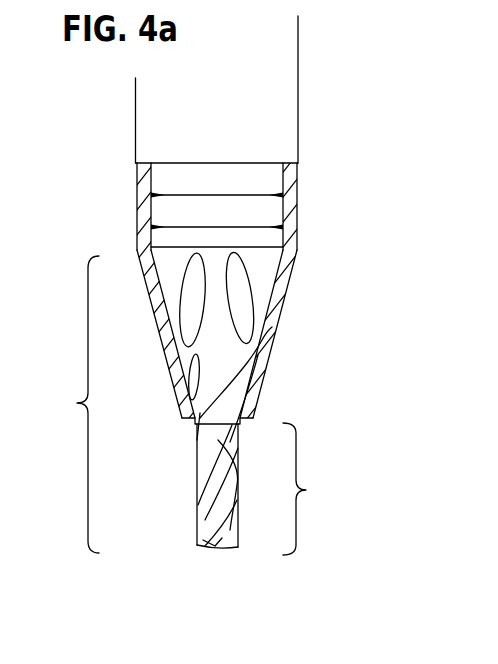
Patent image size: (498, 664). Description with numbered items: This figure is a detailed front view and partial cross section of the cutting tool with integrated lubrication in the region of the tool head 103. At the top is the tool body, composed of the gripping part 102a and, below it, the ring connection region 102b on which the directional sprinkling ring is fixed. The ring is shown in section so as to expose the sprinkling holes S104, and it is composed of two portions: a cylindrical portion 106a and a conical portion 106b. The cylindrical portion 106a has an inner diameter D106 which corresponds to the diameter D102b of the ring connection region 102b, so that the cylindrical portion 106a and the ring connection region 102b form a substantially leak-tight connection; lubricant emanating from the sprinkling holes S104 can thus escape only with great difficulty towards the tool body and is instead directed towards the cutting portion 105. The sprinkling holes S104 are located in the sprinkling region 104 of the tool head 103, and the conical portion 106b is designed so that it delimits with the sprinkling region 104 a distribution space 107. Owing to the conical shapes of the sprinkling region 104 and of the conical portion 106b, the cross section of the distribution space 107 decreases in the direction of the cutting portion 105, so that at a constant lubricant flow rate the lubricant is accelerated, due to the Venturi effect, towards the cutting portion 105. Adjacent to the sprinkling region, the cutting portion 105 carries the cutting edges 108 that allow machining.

The gripping part 102a is at (280, 80).
The ring connection region 102b is at (260, 175).
The tool head 103 is at (60, 404).
The sprinkling region 104 is at (340, 415).
The cutting portion 105 is at (315, 489).
The cylindrical portion 106a is at (143, 200).
The conical portion 106b is at (158, 360).
The distribution space 107 is at (270, 300).
The cutting edges 108 is at (217, 500).
The sprinkling holes S104 is at (242, 313).
The inner diameter of cylindrical portion D106 is at (217, 183).
The diameter of ring connection region D102b is at (217, 216).